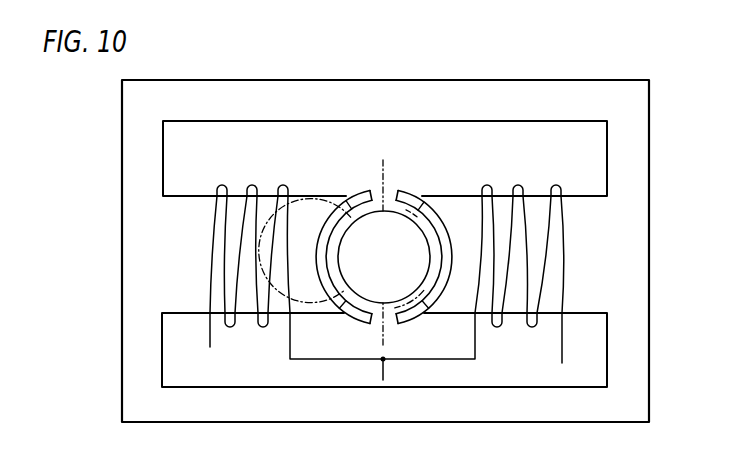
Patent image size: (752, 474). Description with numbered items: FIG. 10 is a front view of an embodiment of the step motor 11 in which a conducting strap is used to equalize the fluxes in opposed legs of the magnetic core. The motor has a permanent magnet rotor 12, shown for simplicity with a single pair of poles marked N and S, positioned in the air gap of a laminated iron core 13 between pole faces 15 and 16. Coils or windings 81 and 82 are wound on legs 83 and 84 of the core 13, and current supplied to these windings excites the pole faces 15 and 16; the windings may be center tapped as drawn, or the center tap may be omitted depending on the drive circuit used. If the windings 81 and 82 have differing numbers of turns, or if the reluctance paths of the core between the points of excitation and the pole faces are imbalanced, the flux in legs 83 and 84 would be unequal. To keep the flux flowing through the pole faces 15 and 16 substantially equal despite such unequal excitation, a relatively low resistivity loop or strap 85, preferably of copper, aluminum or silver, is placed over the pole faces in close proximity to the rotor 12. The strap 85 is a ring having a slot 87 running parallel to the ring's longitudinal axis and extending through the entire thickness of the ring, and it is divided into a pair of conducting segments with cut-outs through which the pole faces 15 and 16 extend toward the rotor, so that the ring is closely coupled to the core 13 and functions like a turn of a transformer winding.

The step motor 11 is at (383, 160).
The permanent magnet rotor 12 is at (392, 265).
The laminated iron core 13 is at (632, 290).
The pole face 15 is at (342, 226).
The pole face 16 is at (428, 213).
The coil or winding 81 is at (251, 183).
The coil or winding 82 is at (518, 183).
The core leg 83 is at (183, 316).
The core leg 84 is at (582, 198).
The low resistivity loop or strap 85 is at (416, 180).
The slot 87 is at (397, 186).